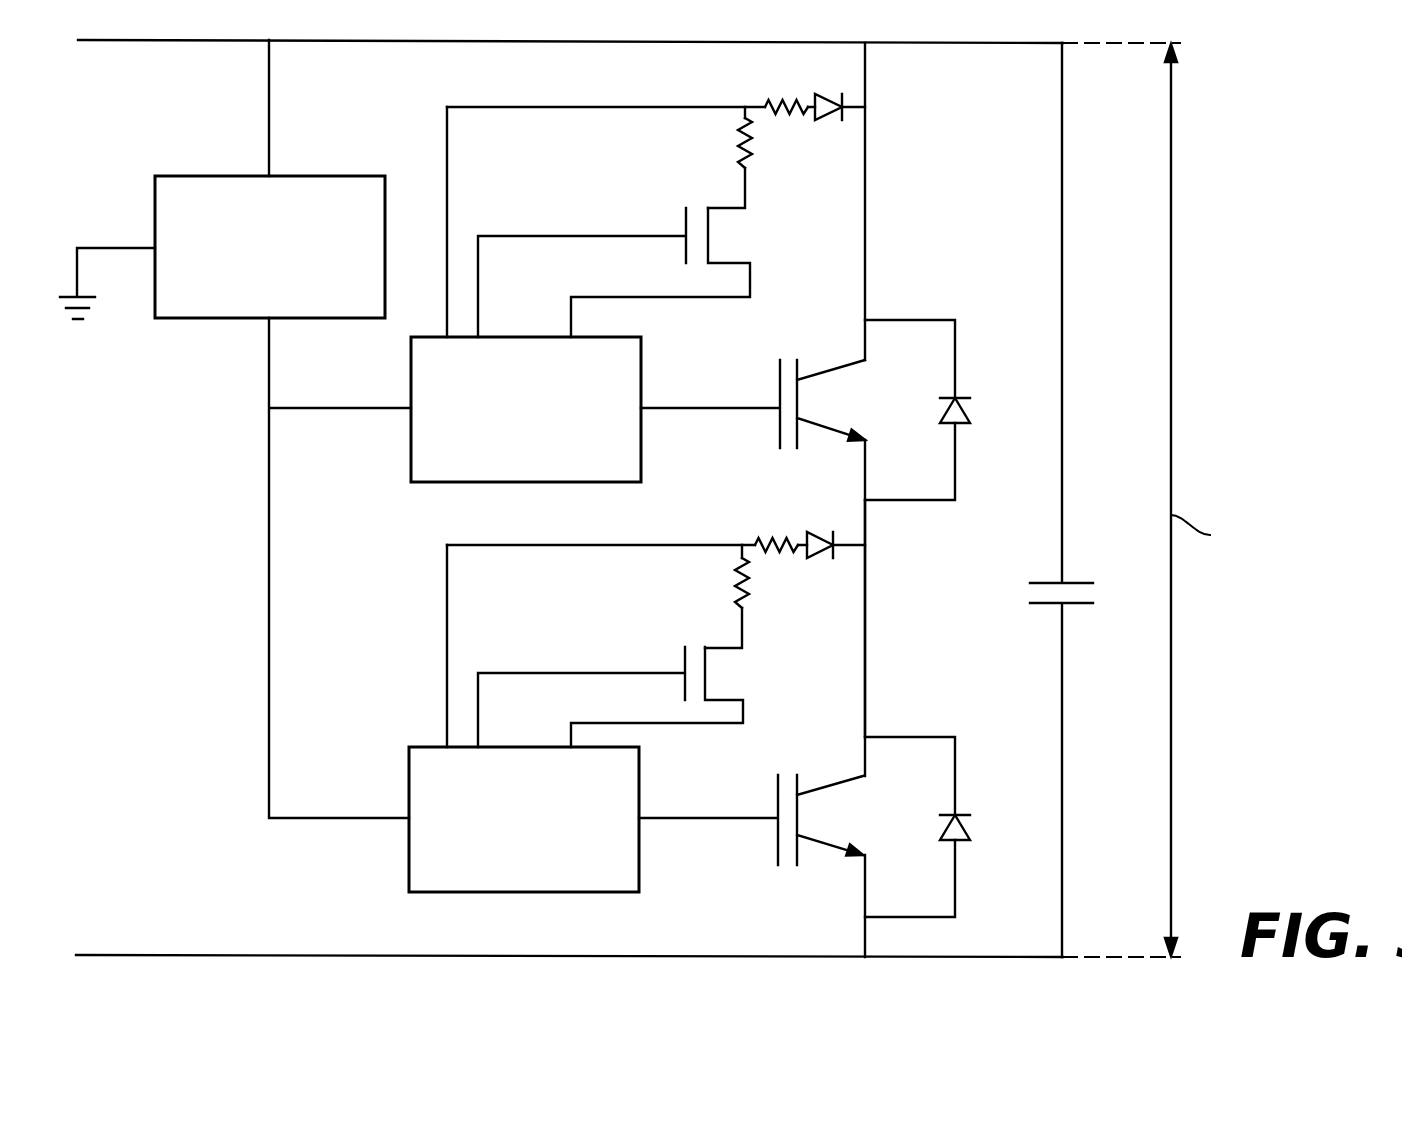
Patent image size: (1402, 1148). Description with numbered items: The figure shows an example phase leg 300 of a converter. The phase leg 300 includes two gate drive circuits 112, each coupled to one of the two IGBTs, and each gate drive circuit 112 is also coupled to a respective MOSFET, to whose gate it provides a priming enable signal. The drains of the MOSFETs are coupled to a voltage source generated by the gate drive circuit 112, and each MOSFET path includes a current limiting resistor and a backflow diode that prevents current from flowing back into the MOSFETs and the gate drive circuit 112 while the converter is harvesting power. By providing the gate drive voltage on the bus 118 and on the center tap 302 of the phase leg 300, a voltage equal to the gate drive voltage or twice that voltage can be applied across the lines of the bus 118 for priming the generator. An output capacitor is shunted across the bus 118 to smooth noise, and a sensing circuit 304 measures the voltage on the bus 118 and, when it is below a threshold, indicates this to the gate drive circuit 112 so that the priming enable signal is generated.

The phase leg 300 is at (674, 497).
The center tap 302 is at (866, 598).
The sensing circuit 304 is at (155, 210).
The gate drive circuit 112 is at (411, 445).
The bus 118 is at (1013, 43).